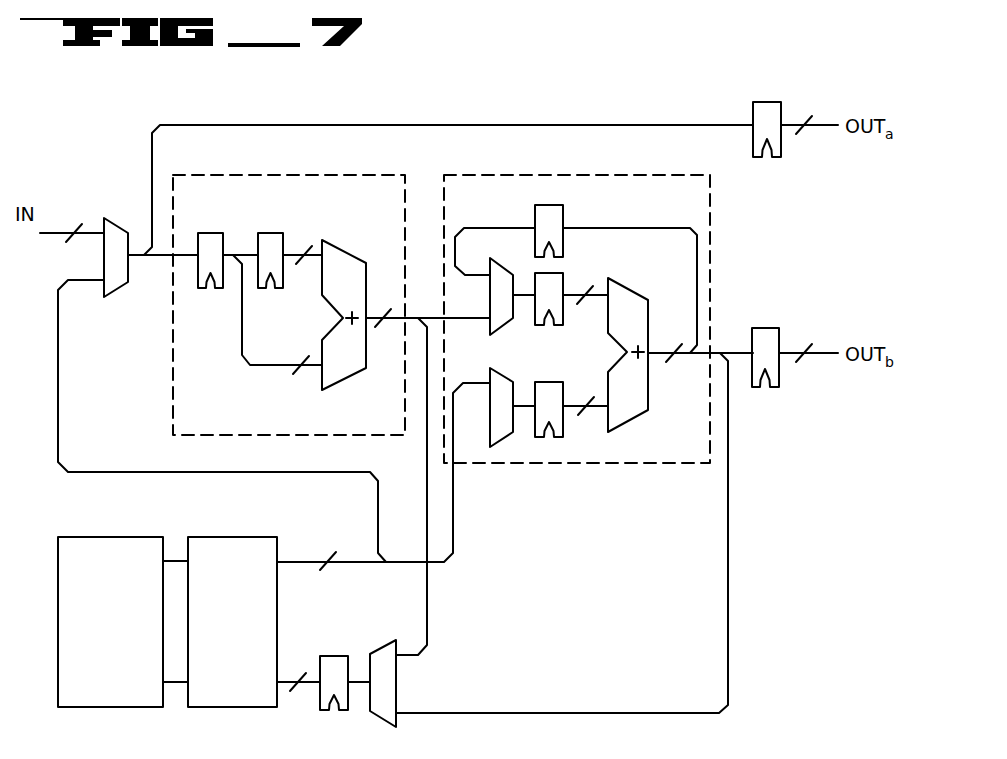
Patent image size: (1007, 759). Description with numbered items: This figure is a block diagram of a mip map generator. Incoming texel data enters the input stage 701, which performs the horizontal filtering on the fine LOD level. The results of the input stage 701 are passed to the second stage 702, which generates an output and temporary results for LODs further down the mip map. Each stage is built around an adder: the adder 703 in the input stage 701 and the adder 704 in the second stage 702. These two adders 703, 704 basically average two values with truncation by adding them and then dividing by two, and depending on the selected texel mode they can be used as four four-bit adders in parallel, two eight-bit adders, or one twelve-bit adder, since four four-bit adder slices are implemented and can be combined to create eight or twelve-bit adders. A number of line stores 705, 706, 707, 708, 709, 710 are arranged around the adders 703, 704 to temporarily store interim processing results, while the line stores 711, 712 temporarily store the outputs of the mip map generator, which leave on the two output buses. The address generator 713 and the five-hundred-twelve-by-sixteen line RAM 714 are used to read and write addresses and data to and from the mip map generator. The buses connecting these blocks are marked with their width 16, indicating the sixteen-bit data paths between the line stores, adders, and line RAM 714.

The 16-bit bus width 16 is at (440, 394).
The input stage 701 is at (296, 173).
The second stage 702 is at (566, 173).
The adder 703 is at (346, 251).
The adder 704 is at (635, 290).
The line store 705 is at (212, 232).
The line store 706 is at (272, 232).
The line store 707 is at (565, 215).
The line store 708 is at (534, 316).
The line store 709 is at (548, 380).
The line store 710 is at (337, 655).
The line store 711 is at (765, 101).
The line store 712 is at (767, 328).
The address generator 713 is at (125, 537).
The 512×16 line RAM 714 is at (250, 537).